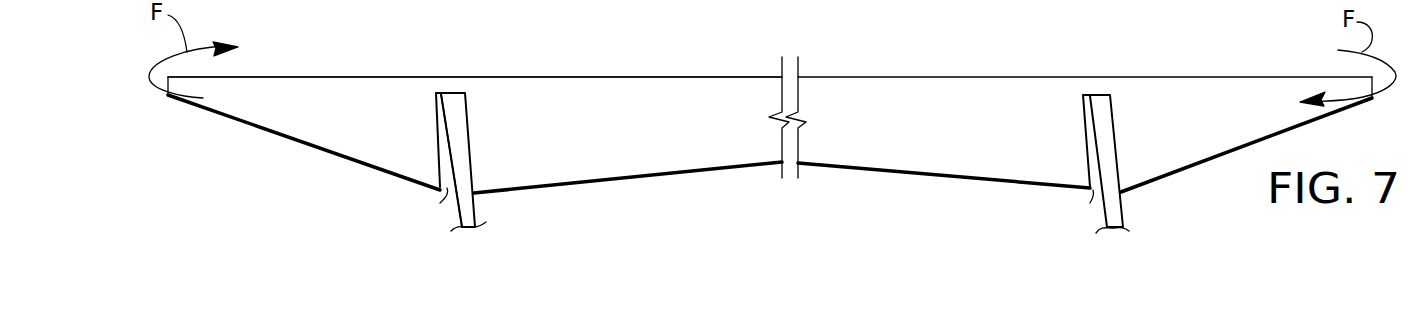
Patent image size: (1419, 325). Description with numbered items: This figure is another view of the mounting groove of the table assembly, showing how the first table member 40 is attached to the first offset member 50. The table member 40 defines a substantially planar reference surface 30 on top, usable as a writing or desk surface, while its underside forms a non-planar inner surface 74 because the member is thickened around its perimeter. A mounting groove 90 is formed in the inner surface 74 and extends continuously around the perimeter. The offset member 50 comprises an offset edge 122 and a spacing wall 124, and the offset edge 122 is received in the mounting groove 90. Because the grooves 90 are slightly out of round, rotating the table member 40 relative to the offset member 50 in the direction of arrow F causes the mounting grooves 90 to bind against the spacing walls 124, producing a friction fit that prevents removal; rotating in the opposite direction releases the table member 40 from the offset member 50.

The reference surface 30 is at (708, 87).
The first table member 40 is at (582, 93).
The inner surface 74 is at (267, 132).
The offset edge 122 is at (450, 93).
The first offset member 50 is at (452, 210).
The mounting groove 90 is at (440, 203).
The spacing wall 124 is at (477, 206).